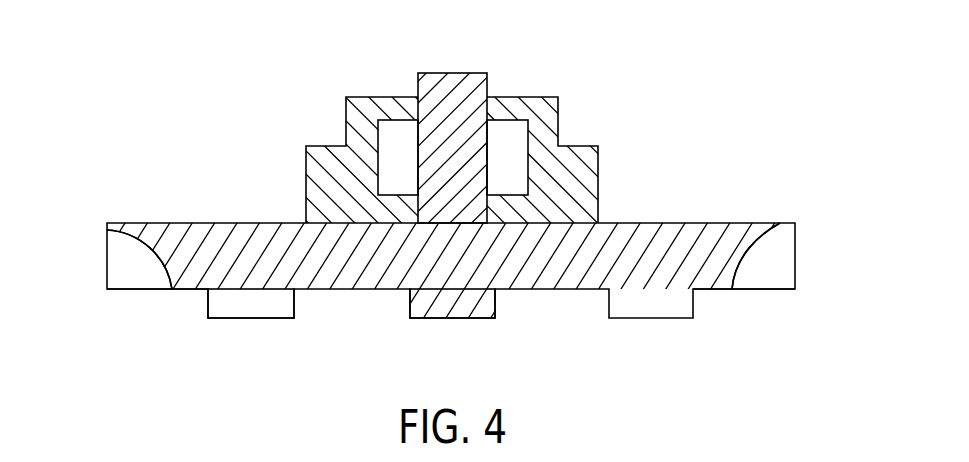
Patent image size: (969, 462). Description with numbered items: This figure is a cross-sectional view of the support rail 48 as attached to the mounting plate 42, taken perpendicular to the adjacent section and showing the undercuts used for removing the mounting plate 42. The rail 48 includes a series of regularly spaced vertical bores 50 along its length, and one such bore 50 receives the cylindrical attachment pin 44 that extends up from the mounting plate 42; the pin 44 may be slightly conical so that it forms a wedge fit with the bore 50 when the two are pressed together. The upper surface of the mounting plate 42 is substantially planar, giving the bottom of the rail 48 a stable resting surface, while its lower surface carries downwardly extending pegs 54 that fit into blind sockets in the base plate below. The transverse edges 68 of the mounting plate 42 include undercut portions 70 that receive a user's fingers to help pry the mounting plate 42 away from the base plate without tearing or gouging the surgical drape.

The mounting plate 42 is at (673, 223).
The cylindrical attachment pin 44 is at (453, 72).
The rail 48 is at (578, 145).
The vertical bores 50 is at (410, 88).
The pegs 54 is at (252, 320).
The transverse edges 68 is at (92, 178).
The undercut portions 70 is at (113, 310).